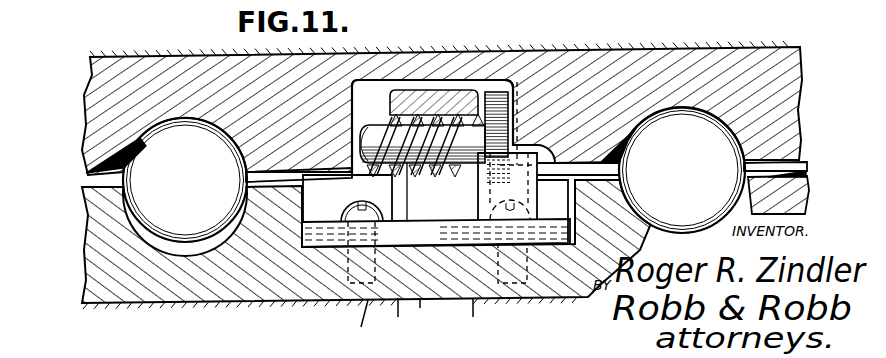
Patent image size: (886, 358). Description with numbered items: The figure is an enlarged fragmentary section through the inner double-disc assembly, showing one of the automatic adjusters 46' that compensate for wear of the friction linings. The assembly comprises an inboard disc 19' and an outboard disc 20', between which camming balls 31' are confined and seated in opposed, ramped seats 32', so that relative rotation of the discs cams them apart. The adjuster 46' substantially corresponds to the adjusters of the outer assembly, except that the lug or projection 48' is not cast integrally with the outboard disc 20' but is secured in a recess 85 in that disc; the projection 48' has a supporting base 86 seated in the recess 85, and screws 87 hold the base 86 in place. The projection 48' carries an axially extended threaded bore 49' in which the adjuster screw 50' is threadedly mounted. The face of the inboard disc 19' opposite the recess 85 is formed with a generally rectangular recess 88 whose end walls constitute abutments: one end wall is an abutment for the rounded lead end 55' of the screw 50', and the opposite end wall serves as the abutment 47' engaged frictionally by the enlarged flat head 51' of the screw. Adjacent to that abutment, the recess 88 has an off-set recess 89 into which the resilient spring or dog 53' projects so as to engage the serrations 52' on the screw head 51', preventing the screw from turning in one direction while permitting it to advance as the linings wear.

The inboard disc 19′ is at (740, 48).
The outboard disc 20′ is at (435, 318).
The camming balls 31′ is at (434, 174).
The ramped seats 32′ is at (128, 153).
The automatic adjusters 46′ is at (497, 92).
The abutment 47′ is at (355, 110).
The lug or projection 48′ is at (449, 90).
The threaded bore 49′ is at (445, 236).
The adjuster screw 50′ is at (374, 128).
The head 51′ is at (512, 101).
The serrations 52′ is at (500, 116).
The spring or dog 53′ is at (488, 206).
The lead end 55′ is at (357, 142).
The recess 85 is at (329, 250).
The supporting base 86 is at (308, 249).
The screws 87 is at (439, 198).
The rectangular recess 88 is at (415, 78).
The off-set recess 89 is at (578, 150).